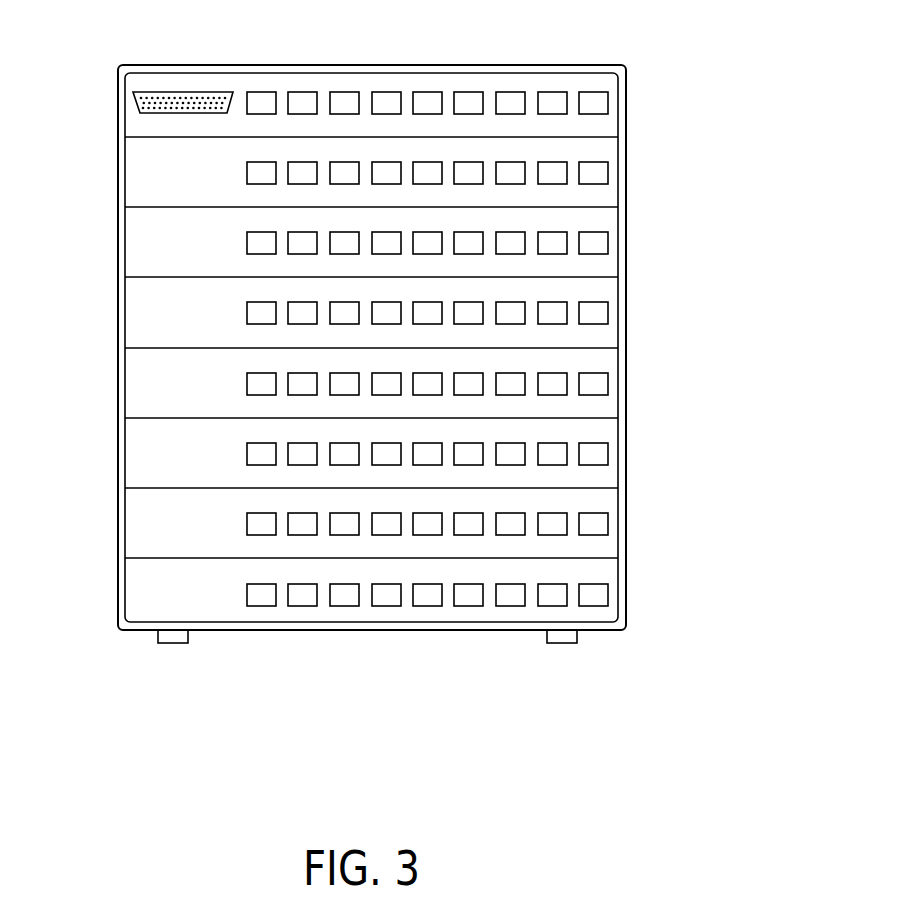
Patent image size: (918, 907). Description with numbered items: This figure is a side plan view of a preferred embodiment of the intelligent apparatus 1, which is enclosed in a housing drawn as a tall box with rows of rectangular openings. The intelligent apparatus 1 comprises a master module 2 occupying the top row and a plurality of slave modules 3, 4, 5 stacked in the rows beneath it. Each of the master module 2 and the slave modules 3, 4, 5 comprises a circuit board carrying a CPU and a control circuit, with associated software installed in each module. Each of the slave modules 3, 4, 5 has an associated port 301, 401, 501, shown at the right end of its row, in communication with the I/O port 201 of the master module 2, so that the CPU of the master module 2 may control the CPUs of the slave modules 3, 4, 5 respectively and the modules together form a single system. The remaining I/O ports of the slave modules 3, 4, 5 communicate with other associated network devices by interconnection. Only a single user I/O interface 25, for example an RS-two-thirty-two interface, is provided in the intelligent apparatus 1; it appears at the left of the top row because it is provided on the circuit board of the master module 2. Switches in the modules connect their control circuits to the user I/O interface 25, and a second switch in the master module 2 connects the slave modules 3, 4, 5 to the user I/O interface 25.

The intelligent apparatus 1 is at (722, 316).
The master module 2 is at (150, 129).
The slave module 3 is at (158, 176).
The slave module 4 is at (160, 245).
The slave module 5 is at (160, 317).
The user I/O interface 25 is at (137, 93).
The I/O port 201 is at (598, 103).
The port 301 is at (598, 176).
The port 401 is at (598, 246).
The port 501 is at (598, 316).